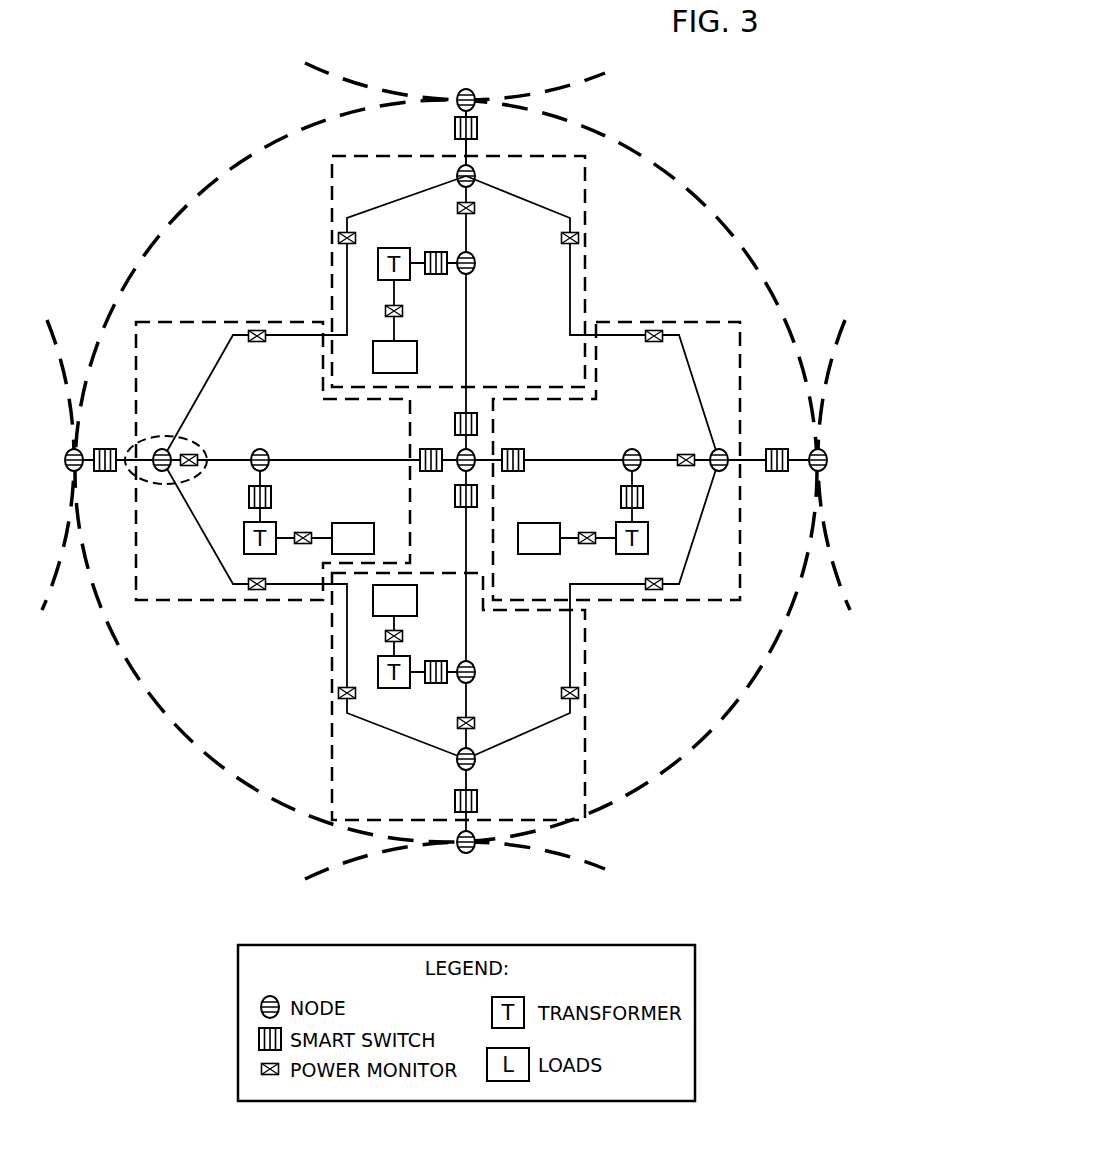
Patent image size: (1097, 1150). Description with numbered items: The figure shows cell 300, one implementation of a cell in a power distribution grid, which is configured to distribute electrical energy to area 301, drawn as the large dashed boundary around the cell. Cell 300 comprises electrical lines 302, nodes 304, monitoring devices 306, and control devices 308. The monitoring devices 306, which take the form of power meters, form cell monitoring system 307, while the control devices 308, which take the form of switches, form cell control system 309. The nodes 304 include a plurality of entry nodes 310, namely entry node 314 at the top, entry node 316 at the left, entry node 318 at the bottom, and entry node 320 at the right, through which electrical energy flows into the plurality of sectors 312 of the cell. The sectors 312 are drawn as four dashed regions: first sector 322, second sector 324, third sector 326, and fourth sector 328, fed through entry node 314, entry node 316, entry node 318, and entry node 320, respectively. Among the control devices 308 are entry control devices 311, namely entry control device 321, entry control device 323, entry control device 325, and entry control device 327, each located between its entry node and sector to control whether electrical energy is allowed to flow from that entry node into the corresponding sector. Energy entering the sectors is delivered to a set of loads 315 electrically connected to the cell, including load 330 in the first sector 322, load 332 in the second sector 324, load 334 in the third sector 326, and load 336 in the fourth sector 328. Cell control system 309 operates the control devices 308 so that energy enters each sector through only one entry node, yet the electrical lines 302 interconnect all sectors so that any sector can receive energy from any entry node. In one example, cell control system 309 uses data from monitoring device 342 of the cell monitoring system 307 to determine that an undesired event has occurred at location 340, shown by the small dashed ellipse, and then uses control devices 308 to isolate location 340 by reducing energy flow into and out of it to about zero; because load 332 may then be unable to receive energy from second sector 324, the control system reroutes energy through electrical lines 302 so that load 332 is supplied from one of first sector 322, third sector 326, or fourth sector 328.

The cell 300 is at (206, 109).
The area 301 is at (716, 206).
The electrical lines 302 is at (574, 200).
The nodes 304 is at (475, 258).
The monitoring devices 306 is at (557, 241).
The cell monitoring system 307 is at (477, 723).
The control devices 308 is at (482, 132).
The cell control system 309 is at (489, 123).
The plurality of entry nodes 310 is at (460, 88).
The entry control devices 311 is at (446, 114).
The plurality of sectors 312 is at (591, 283).
The entry node 314 is at (470, 89).
The set of loads 315 is at (423, 357).
The entry node 316 is at (68, 452).
The entry node 318 is at (472, 853).
The entry node 320 is at (826, 450).
The entry control device 321 is at (454, 128).
The first sector 322 is at (327, 256).
The entry control device 323 is at (103, 449).
The second sector 324 is at (214, 319).
The entry control device 325 is at (455, 800).
The third sector 326 is at (330, 722).
The entry control device 327 is at (777, 449).
The fourth sector 328 is at (684, 319).
The load 330 is at (449, 326).
The load 332 is at (352, 522).
The load 334 is at (372, 598).
The load 336 is at (540, 522).
The location 340 is at (152, 488).
The monitoring device 342 is at (193, 452).